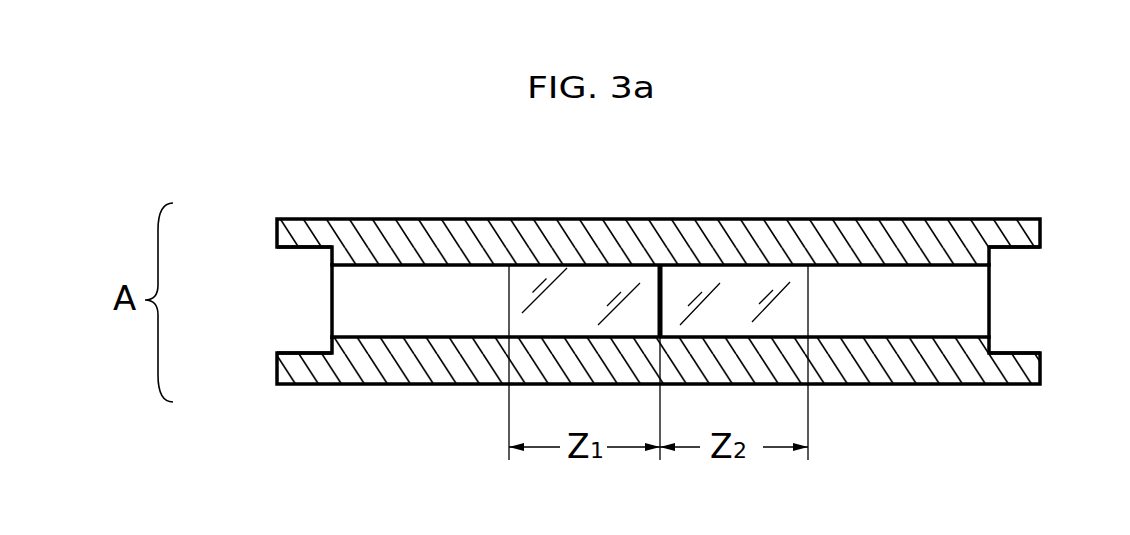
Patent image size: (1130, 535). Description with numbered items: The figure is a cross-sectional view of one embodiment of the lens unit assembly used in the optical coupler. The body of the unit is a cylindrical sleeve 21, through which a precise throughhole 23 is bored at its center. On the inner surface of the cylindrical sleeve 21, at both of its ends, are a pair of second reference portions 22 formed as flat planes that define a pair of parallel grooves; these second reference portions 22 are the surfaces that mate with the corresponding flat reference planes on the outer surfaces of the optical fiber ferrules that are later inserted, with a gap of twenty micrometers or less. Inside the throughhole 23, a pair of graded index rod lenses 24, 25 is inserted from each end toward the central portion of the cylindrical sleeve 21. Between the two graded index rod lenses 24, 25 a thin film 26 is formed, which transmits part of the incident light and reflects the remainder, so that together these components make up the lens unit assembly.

The cylindrical sleeve 21 is at (403, 232).
The second reference portions 22 is at (284, 248).
The throughhole 23 is at (898, 278).
The graded index rod lens 24 is at (575, 277).
The graded index rod lens 25 is at (745, 280).
The thin film 26 is at (657, 288).